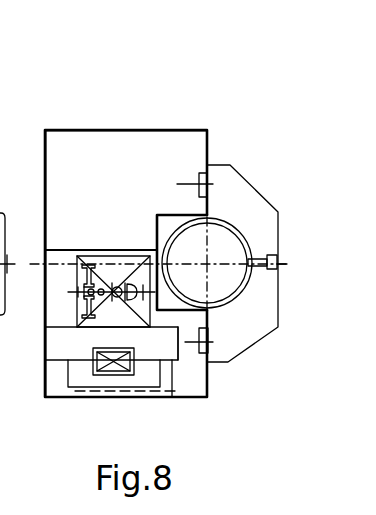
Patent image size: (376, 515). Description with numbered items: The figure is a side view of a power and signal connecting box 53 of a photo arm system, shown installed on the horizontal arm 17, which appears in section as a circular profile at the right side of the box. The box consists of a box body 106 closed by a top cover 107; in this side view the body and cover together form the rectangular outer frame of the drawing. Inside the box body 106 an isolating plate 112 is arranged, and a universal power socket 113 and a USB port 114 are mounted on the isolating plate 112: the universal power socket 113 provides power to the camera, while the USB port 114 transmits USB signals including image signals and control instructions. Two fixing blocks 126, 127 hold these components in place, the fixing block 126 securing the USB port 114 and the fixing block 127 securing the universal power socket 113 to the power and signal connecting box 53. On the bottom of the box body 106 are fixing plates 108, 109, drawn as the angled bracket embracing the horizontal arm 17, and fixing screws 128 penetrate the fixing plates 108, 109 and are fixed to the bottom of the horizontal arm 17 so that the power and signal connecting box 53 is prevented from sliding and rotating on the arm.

The power and signal connecting box 53 is at (110, 100).
The top cover 107 is at (45, 140).
The universal power socket 113 is at (97, 266).
The isolating plate 112 is at (105, 253).
The box body 106 is at (188, 129).
The horizontal arm 17 is at (218, 245).
The fixing screws 128 is at (262, 272).
The fixing plate 108 is at (238, 333).
The fixing plate 109 is at (240, 301).
The fixing block 126 is at (164, 347).
The fixing block 127 is at (133, 383).
The USB port 114 is at (115, 368).